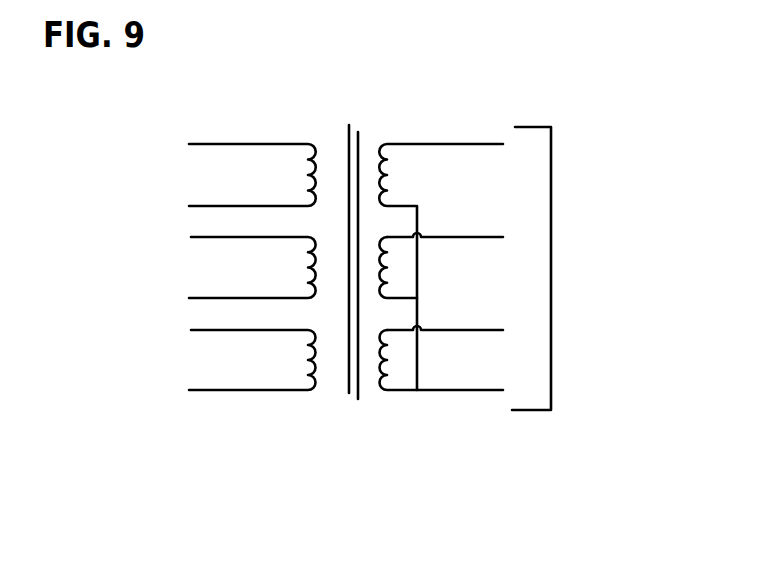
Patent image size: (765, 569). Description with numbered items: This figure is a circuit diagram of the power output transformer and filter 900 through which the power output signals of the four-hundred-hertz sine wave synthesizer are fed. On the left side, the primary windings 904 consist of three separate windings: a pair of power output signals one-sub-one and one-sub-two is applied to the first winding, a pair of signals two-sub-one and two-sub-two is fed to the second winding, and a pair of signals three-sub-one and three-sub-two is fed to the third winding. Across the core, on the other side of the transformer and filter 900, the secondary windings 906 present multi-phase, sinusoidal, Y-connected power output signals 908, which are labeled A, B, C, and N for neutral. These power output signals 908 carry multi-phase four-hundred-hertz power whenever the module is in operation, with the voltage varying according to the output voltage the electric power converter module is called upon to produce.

The power output transformer and filter 900 is at (315, 67).
The primary windings 904 is at (305, 139).
The secondary windings 906 is at (389, 137).
The power output signals 908 is at (552, 199).